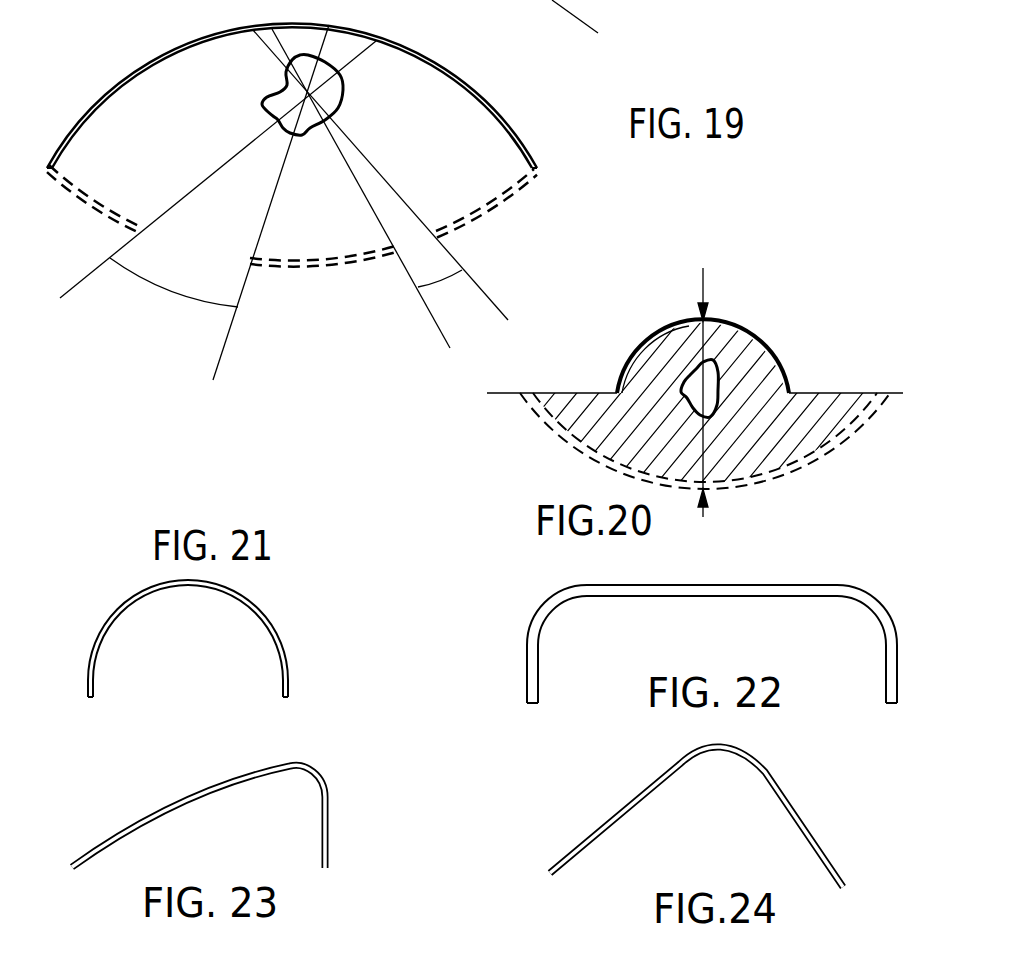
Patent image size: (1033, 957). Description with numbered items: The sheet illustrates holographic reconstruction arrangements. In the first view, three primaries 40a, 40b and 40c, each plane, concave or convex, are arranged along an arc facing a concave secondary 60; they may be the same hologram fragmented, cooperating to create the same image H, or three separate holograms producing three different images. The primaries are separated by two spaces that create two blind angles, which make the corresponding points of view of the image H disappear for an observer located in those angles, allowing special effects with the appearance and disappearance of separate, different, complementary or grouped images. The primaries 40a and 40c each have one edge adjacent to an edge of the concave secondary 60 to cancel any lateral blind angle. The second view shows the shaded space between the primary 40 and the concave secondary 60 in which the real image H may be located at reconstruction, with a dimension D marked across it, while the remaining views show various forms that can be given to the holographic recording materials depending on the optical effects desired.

In FIG. 19, the concave secondary 60 is at (122, 78).
In FIG. 20, the concave secondary 60 is at (738, 328).
In FIG. 19, the image H is at (337, 88).
In FIG. 20, the image H is at (716, 386).
In FIG. 20, the primary 40 is at (813, 466).
In FIG. 19, the primary 40a is at (67, 198).
In FIG. 19, the primary 40b is at (322, 273).
In FIG. 19, the primary 40c is at (503, 207).
In FIG. 20, the thickness dimension D is at (702, 283).